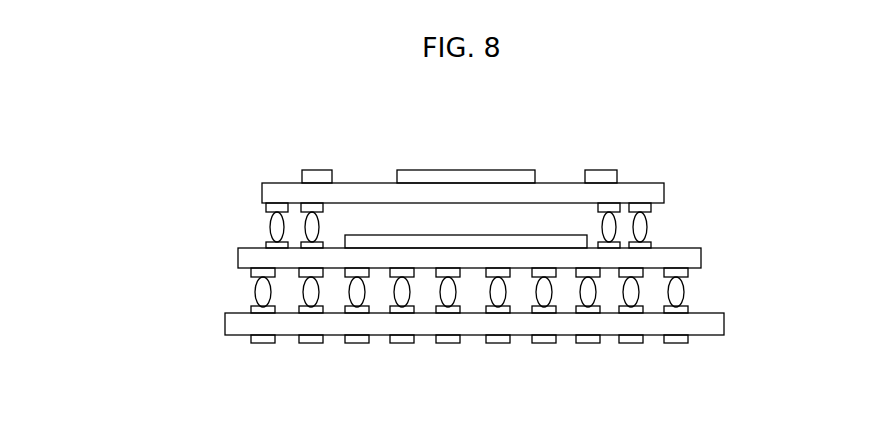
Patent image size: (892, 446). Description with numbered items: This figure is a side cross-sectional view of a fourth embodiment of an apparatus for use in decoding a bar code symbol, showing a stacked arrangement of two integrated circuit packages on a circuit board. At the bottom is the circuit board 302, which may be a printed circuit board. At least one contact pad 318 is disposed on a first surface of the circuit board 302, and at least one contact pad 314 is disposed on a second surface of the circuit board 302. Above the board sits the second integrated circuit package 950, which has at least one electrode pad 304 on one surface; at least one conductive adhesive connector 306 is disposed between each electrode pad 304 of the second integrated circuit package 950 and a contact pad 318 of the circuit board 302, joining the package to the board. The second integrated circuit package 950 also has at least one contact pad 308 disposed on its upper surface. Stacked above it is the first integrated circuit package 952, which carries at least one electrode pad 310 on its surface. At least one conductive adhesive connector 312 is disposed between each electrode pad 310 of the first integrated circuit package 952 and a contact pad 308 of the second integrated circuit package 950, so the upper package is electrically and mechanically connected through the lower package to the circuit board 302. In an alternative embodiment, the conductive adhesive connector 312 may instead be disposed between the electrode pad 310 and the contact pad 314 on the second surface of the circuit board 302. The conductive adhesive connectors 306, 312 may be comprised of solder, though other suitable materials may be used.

The circuit board 302 is at (710, 330).
The electrode pad 304 is at (257, 273).
The conductive adhesive connector 306 is at (313, 380).
The contact pad 308 is at (272, 244).
The electrode pad 310 is at (655, 208).
The conductive adhesive connector 312 is at (273, 225).
The contact pad 314 is at (492, 342).
The contact pad 318 is at (687, 310).
The second integrated circuit package 950 is at (700, 262).
The first integrated circuit package 952 is at (652, 183).